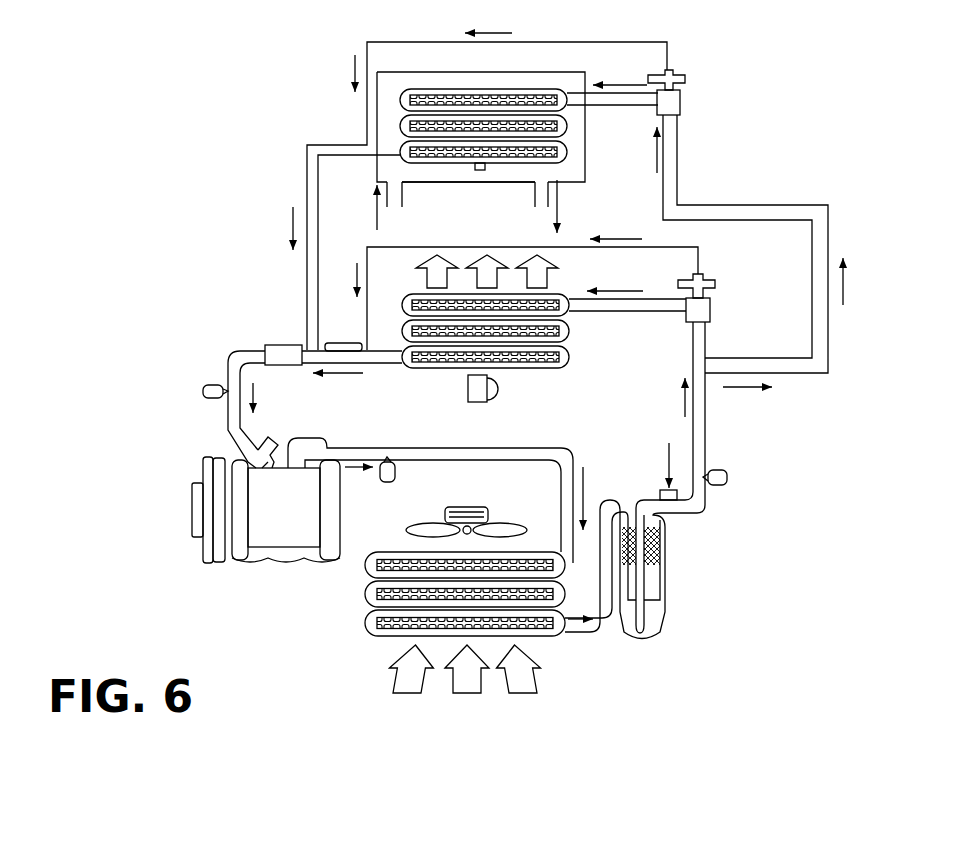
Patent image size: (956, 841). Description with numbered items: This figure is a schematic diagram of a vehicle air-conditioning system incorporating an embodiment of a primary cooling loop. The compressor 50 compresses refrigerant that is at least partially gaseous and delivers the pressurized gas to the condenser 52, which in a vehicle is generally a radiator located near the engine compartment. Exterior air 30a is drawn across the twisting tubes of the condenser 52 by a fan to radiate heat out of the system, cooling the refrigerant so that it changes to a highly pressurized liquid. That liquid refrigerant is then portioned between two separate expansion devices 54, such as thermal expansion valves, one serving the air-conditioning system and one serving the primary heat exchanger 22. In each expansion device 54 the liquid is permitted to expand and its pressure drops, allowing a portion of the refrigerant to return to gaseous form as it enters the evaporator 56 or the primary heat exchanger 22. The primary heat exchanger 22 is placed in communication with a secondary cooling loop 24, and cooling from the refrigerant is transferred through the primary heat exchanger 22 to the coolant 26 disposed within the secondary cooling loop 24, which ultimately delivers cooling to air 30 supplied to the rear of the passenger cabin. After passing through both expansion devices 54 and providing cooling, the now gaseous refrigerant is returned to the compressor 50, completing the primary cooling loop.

The primary heat exchanger 22 is at (587, 157).
The secondary cooling loop 24 is at (406, 204).
The coolant 26 is at (405, 194).
The air 30 is at (556, 265).
The exterior air 30a is at (542, 671).
The compressor 50 is at (200, 548).
The condenser 52 is at (366, 622).
The expansion device 54 is at (682, 88).
The evaporator 56 is at (406, 296).